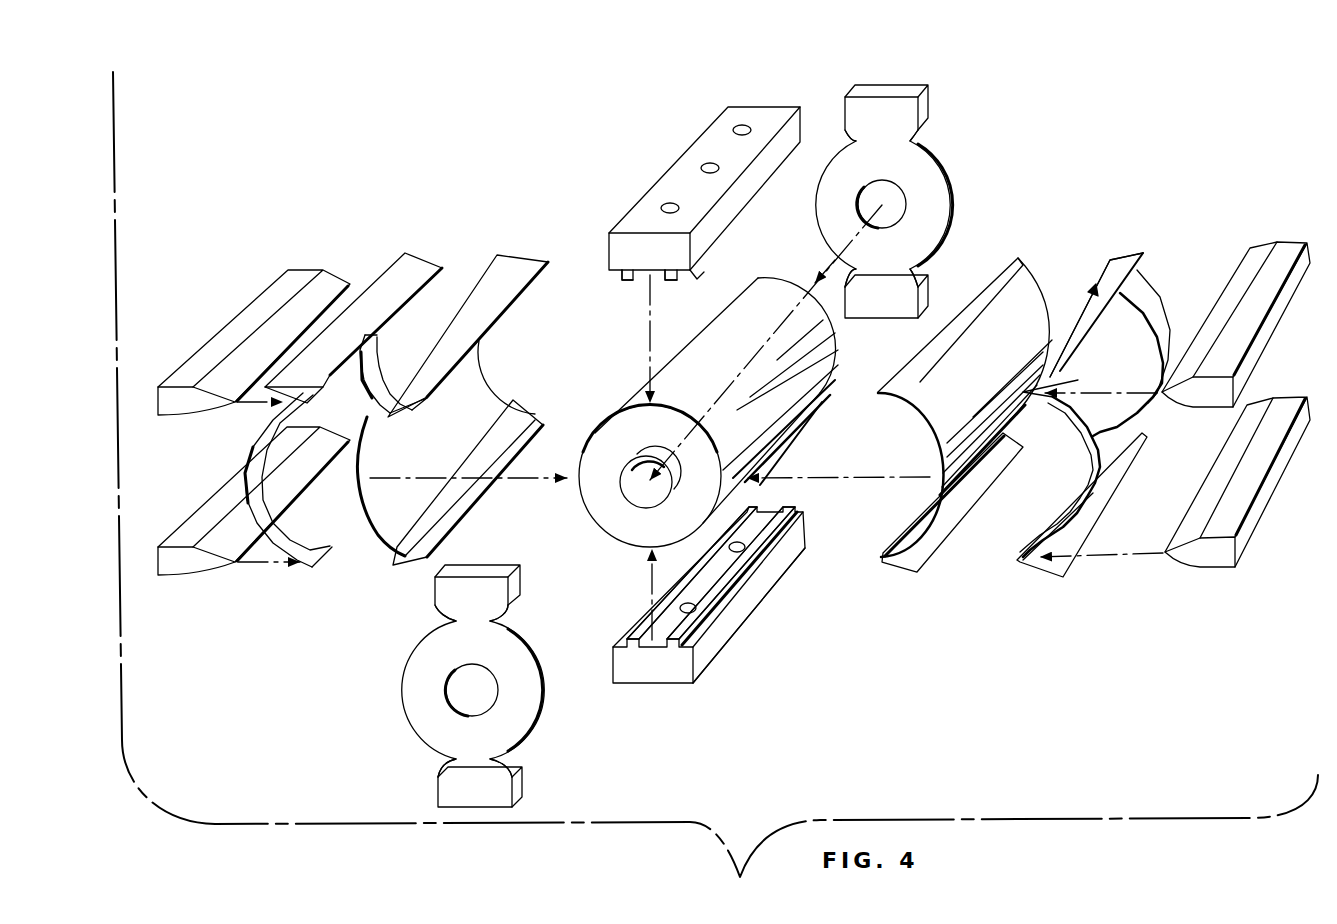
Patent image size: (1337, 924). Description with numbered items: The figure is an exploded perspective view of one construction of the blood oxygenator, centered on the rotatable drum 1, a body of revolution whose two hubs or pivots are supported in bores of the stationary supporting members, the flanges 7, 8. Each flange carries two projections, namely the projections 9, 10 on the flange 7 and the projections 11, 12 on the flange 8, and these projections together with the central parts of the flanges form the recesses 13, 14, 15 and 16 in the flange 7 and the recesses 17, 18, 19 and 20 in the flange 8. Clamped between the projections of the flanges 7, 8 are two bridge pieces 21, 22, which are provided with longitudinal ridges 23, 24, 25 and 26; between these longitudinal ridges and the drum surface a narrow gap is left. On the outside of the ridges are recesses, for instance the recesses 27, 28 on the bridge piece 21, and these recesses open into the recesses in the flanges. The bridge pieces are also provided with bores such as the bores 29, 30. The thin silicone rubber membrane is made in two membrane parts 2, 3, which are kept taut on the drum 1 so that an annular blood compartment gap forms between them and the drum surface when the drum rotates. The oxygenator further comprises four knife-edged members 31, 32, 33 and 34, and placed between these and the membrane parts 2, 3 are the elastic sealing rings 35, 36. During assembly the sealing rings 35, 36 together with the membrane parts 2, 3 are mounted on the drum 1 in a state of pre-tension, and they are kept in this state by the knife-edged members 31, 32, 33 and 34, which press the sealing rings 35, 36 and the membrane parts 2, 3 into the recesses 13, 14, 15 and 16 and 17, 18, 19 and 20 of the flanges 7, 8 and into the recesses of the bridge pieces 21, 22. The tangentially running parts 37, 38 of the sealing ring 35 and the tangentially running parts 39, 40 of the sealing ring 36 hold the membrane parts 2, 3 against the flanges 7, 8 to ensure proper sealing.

The drum 1 is at (638, 402).
The membrane part 2 is at (483, 373).
The membrane part 3 is at (932, 440).
The flange 7 is at (420, 673).
The flange 8 is at (940, 196).
The projection 9 is at (450, 790).
The projection 10 is at (475, 570).
The projection 11 is at (873, 303).
The projection 12 is at (877, 112).
The recess 13 is at (453, 770).
The recess 14 is at (497, 767).
The recess 15 is at (450, 618).
The recess 16 is at (510, 610).
The recess 17 is at (856, 278).
The recess 18 is at (907, 273).
The recess 19 is at (852, 142).
The recess 20 is at (907, 137).
The bridge piece 21 is at (648, 663).
The bridge piece 22 is at (737, 105).
The longitudinal ridge 23 is at (755, 477).
The longitudinal ridge 24 is at (790, 505).
The longitudinal ridge 25 is at (630, 274).
The longitudinal ridge 26 is at (670, 280).
The recess 27 is at (747, 590).
The recess 28 is at (637, 627).
The bore 29 is at (745, 547).
The bore 30 is at (670, 203).
The knife-edged member 31 is at (185, 565).
The knife-edged member 32 is at (300, 278).
The knife-edged member 33 is at (1203, 560).
The knife-edged member 34 is at (1258, 257).
The elastic sealing ring 35 is at (418, 262).
The elastic sealing ring 36 is at (1125, 263).
The tangentially running part 37 is at (277, 533).
The tangentially running part 38 is at (372, 363).
The tangentially running part 39 is at (1087, 440).
The tangentially running part 40 is at (1148, 318).